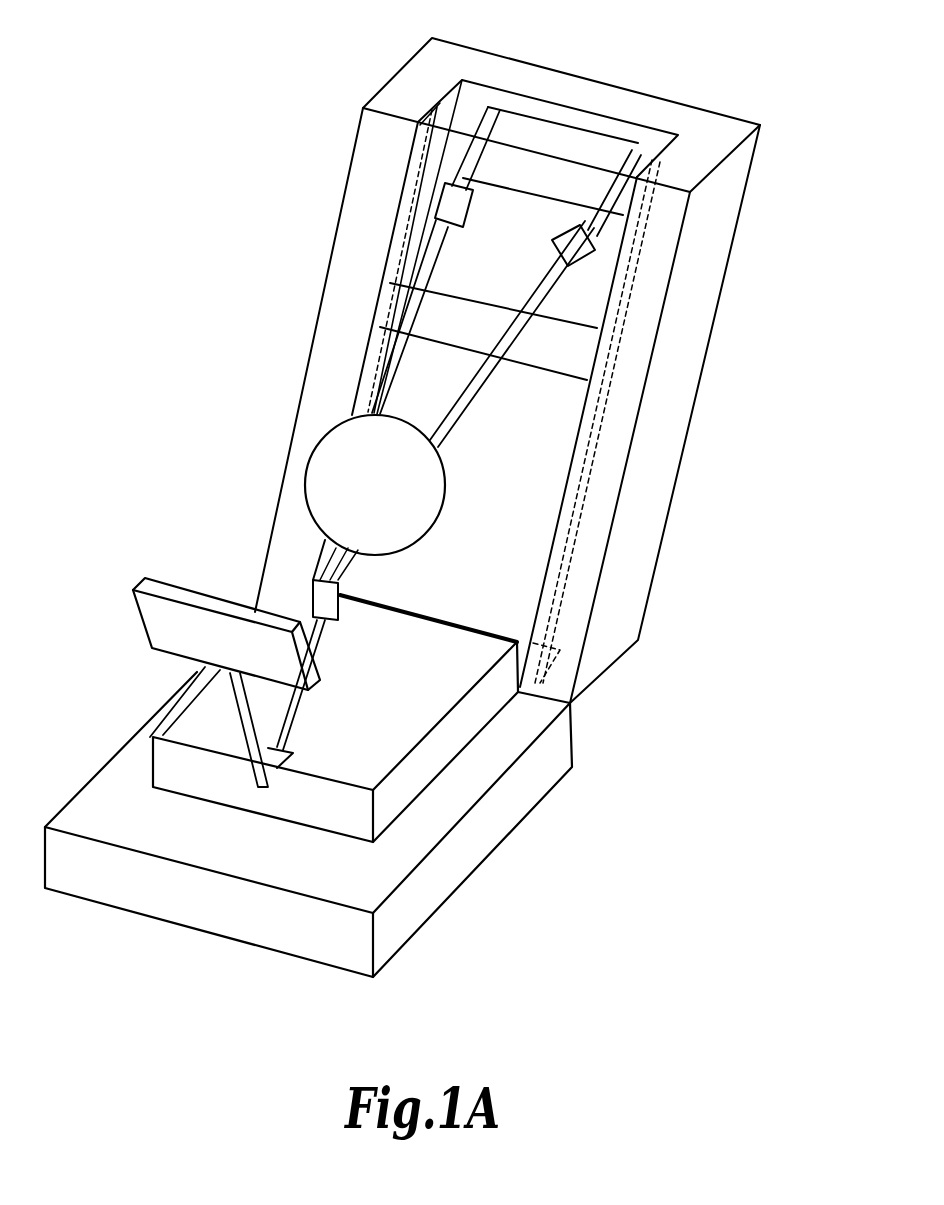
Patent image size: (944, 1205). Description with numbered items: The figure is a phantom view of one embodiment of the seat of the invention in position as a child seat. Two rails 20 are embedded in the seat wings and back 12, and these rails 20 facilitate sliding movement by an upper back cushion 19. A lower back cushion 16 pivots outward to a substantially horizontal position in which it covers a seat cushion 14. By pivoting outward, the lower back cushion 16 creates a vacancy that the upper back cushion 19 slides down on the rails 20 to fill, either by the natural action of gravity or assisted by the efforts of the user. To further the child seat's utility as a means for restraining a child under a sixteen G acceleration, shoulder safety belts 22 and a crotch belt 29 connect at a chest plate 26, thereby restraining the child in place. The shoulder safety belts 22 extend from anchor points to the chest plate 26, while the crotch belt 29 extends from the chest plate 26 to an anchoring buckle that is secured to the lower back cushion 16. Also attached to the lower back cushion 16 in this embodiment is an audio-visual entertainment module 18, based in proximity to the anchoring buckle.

The seat wings and back 12 is at (700, 278).
The seat cushion 14 is at (252, 903).
The lower back cushion 16 is at (432, 693).
The audio-visual entertainment module 18 is at (165, 620).
The upper back cushion 19 is at (453, 312).
The rails 20 is at (430, 145).
The shoulder safety belts 22 is at (490, 360).
The chest plate 26 is at (328, 470).
The crotch belt 29 is at (313, 590).